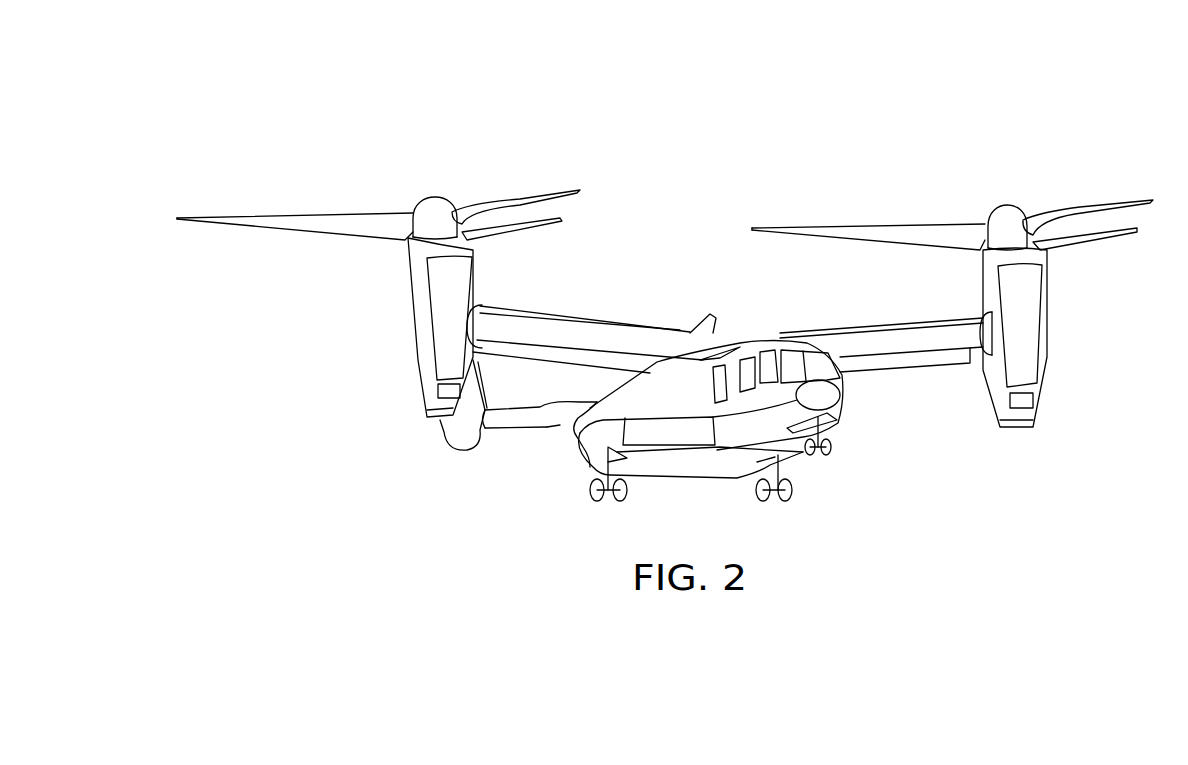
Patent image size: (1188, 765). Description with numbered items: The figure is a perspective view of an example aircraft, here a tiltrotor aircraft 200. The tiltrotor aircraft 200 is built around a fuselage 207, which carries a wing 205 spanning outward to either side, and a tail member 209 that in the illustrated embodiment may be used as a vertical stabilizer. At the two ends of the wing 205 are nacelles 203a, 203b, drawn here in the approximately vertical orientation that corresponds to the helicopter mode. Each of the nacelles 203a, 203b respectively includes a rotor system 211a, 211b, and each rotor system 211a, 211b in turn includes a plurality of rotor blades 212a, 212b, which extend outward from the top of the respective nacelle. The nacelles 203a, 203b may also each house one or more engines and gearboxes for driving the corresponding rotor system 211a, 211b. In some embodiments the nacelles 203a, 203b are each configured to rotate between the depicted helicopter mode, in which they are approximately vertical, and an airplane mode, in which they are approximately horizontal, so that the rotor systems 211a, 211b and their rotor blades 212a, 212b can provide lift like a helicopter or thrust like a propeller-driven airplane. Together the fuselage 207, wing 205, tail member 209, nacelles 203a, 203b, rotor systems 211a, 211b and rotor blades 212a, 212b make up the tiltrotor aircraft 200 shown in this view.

The tiltrotor aircraft 200 is at (798, 146).
The nacelle 203a is at (387, 313).
The nacelle 203b is at (1058, 332).
The wing 205 is at (598, 318).
The fuselage 207 is at (847, 400).
The tail member 209 is at (570, 440).
The rotor system 211a is at (433, 175).
The rotor system 211b is at (1017, 188).
The rotor blades 212a is at (333, 213).
The rotor blades 212b is at (912, 228).